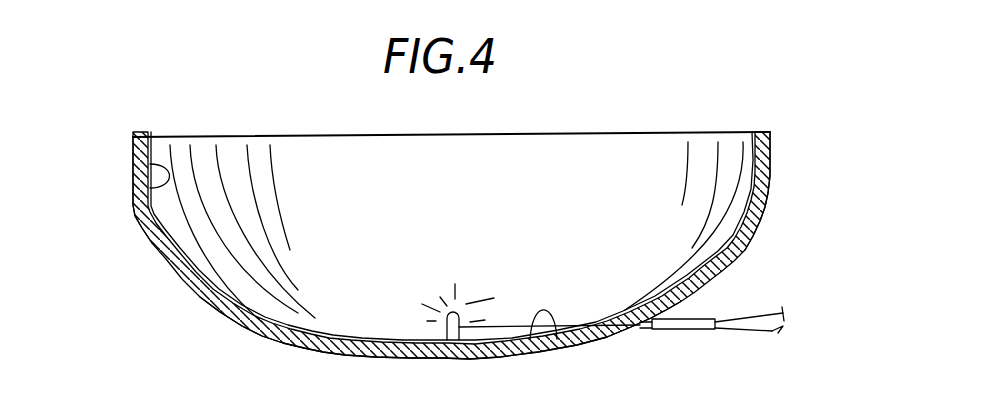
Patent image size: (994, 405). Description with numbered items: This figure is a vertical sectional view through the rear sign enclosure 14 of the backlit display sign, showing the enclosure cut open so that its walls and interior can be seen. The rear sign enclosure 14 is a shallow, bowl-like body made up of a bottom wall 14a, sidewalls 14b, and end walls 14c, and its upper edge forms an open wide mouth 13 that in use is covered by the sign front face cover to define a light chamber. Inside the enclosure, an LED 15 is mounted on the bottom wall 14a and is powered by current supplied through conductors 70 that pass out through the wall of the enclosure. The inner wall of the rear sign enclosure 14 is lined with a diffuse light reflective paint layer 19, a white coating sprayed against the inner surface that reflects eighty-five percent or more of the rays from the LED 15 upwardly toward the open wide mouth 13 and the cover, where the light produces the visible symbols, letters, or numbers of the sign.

The open wide mouth 13 is at (335, 136).
The rear sign enclosure element 14 is at (645, 329).
The bottom wall 14a is at (435, 358).
The sidewalls 14b is at (140, 208).
The end walls 14c is at (411, 198).
The LED 15 is at (459, 313).
The diffuse light reflective paint layer 19 is at (152, 166).
The conductors 70 is at (772, 326).